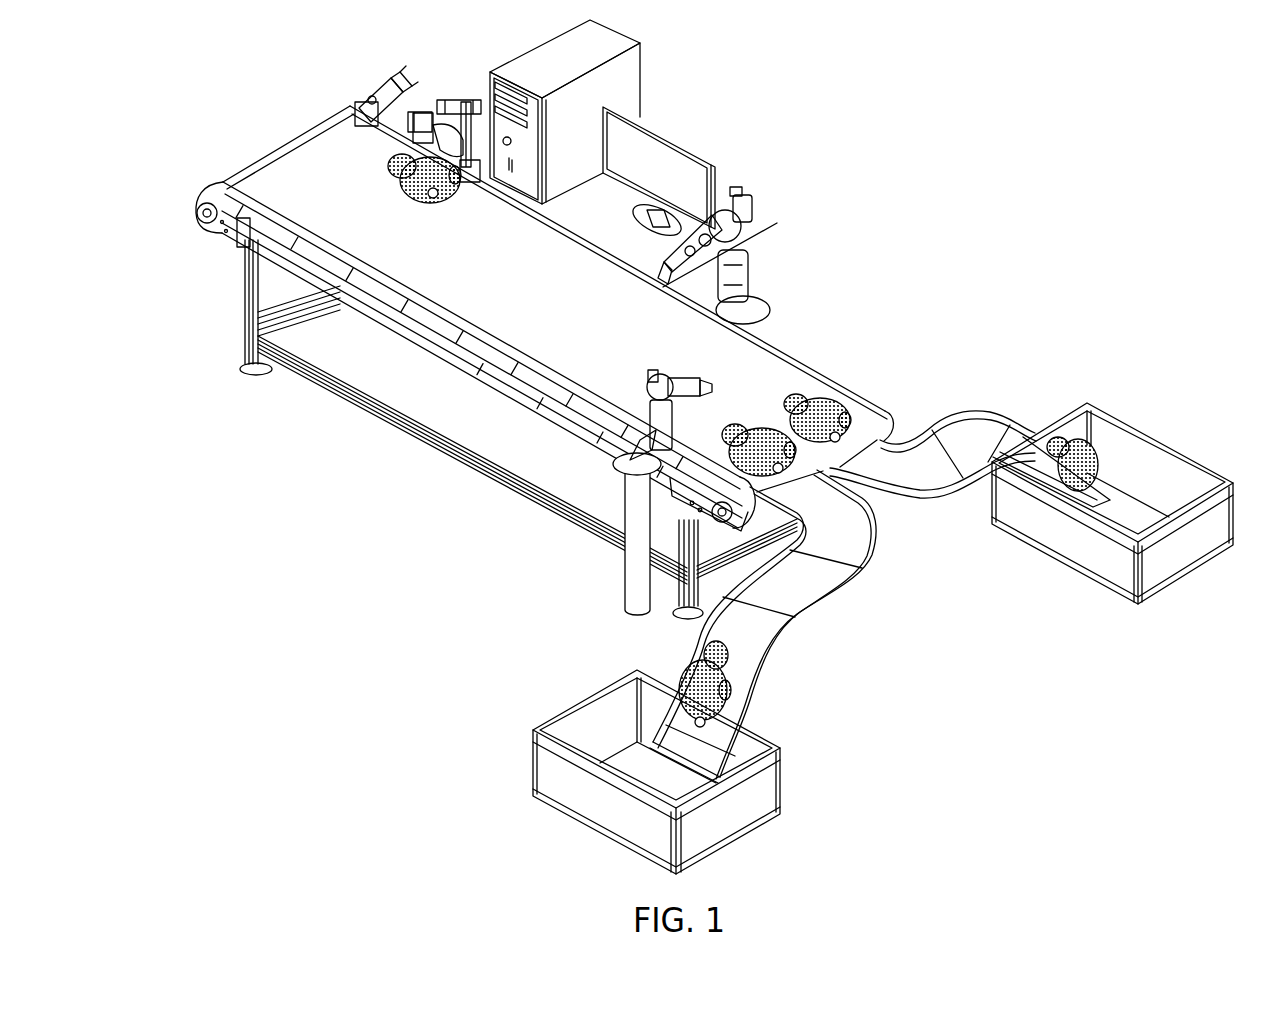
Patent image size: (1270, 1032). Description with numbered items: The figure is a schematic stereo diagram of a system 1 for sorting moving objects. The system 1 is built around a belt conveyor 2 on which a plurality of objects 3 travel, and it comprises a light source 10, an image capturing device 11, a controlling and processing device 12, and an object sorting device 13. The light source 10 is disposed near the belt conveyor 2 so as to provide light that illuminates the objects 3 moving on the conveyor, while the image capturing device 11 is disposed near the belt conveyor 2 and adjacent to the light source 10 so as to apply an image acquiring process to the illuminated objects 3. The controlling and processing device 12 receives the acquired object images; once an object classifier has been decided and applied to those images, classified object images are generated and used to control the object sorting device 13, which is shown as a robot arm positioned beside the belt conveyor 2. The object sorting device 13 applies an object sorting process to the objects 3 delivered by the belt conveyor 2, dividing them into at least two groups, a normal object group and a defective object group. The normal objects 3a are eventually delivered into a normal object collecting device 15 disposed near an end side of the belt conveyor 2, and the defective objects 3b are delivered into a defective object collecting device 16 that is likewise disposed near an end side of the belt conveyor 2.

The system for sorting moving objects 1 is at (980, 222).
The belt conveyor 2 is at (212, 190).
The objects 3 is at (388, 157).
The normal objects 3a is at (728, 657).
The defective objects 3b is at (1073, 440).
The light source 10 is at (367, 102).
The image capturing device 11 is at (467, 100).
The controlling and processing device 12 is at (627, 82).
The object sorting device 13 is at (752, 218).
The normal object collecting device 15 is at (543, 706).
The defective object collecting device 16 is at (1180, 443).